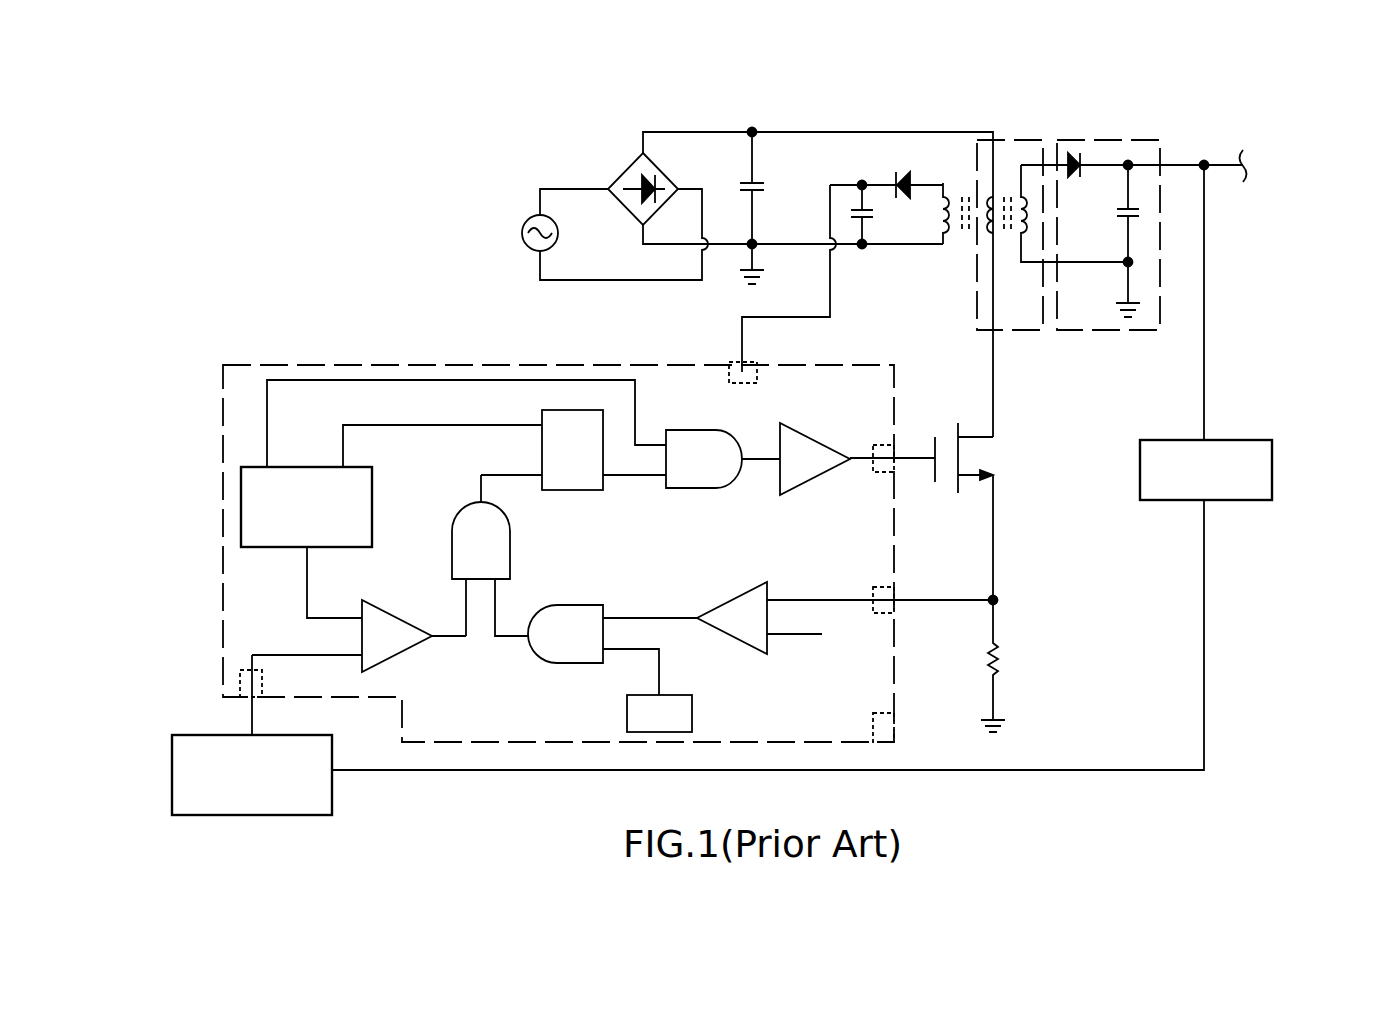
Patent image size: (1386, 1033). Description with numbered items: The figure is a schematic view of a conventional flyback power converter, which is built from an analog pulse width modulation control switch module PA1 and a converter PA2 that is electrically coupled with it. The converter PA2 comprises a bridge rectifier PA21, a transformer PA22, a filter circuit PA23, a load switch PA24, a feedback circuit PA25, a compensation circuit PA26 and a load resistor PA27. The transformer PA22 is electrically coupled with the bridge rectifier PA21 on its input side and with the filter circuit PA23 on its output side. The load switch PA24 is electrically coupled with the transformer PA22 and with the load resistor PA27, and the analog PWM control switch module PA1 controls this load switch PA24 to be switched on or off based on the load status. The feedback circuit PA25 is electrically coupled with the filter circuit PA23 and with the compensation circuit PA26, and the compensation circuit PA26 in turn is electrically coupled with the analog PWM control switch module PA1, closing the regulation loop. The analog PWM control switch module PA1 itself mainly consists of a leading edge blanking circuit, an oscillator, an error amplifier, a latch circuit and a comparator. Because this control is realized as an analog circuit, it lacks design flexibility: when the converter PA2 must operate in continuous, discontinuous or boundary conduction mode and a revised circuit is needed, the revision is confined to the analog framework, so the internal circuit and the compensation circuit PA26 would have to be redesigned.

The analog pulse width modulation control switch module PA1 is at (328, 365).
The converter PA2 is at (789, 408).
The bridge rectifier PA21 is at (631, 165).
The transformer PA22 is at (1023, 140).
The filter circuit PA23 is at (1110, 140).
The load switch PA24 is at (975, 437).
The feedback circuit PA25 is at (1272, 490).
The compensation circuit PA26 is at (332, 800).
The load resistor PA27 is at (1000, 655).